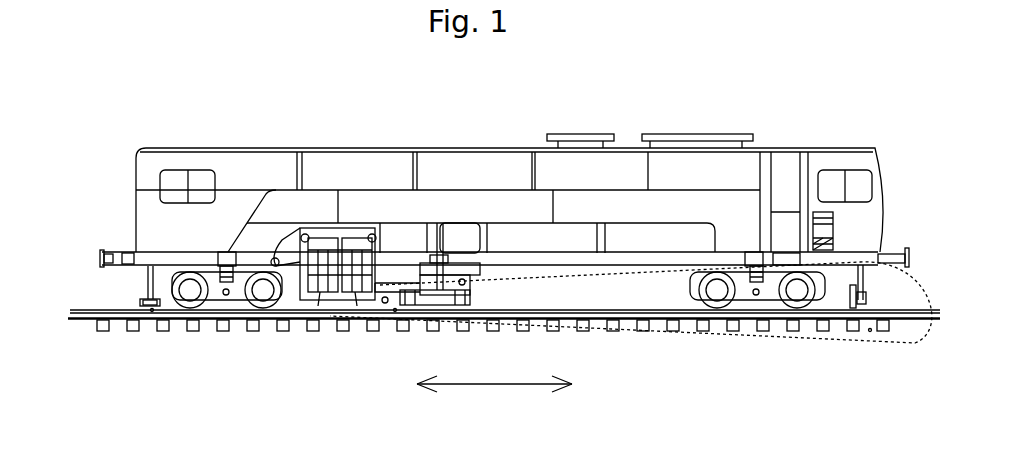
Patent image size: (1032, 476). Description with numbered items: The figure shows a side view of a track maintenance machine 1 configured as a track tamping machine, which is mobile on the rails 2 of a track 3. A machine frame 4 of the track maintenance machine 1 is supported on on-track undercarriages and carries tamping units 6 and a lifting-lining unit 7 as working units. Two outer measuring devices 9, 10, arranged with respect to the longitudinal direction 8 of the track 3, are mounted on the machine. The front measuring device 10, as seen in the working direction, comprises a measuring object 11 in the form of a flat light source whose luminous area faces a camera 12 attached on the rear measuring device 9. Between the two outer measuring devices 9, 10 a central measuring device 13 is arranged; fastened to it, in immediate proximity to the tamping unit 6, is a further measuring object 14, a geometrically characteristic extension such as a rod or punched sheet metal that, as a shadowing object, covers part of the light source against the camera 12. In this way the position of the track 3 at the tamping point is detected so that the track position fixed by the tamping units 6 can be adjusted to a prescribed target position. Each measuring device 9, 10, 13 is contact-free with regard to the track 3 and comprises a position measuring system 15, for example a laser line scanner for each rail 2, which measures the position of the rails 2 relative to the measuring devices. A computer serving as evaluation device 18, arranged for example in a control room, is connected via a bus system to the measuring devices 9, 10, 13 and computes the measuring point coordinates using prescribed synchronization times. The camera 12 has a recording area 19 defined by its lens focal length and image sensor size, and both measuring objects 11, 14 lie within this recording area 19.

The track maintenance machine 1 is at (598, 95).
The rails 2 is at (82, 312).
The track 3 is at (87, 334).
The machine frame 4 is at (516, 210).
The tamping units 6 is at (298, 238).
The lifting-lining unit 7 is at (448, 318).
The longitudinal direction 8 is at (497, 388).
The rear measuring device 9 is at (124, 296).
The front measuring device 10 is at (875, 294).
The measuring object 11 is at (846, 336).
The camera 12 is at (144, 312).
The central measuring device 13 is at (388, 274).
The further measuring object 14 is at (358, 315).
The position measuring system 15 is at (152, 312).
The evaluation device 18 is at (833, 230).
The recording area 19 is at (737, 334).